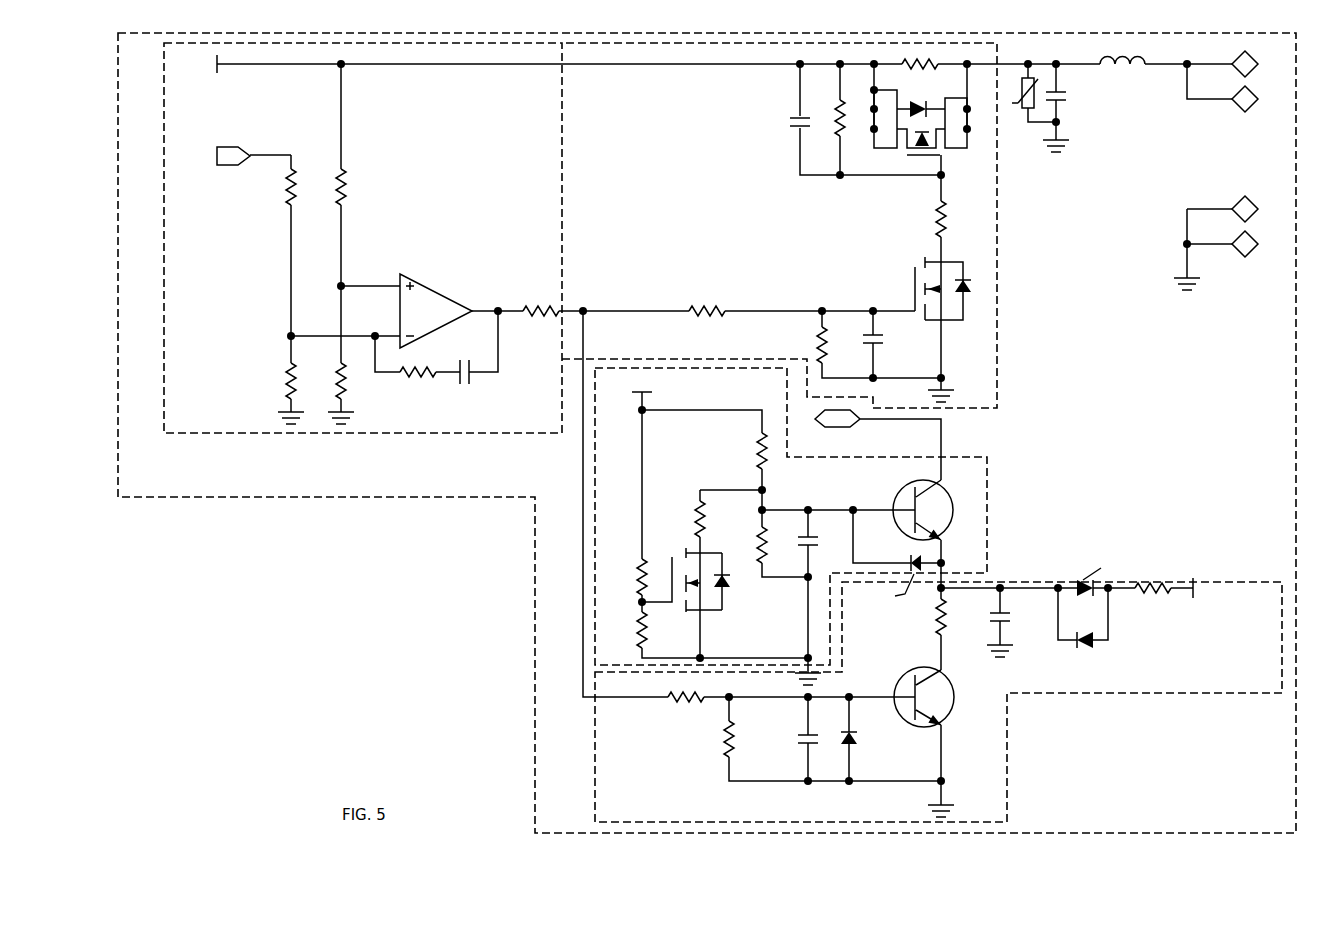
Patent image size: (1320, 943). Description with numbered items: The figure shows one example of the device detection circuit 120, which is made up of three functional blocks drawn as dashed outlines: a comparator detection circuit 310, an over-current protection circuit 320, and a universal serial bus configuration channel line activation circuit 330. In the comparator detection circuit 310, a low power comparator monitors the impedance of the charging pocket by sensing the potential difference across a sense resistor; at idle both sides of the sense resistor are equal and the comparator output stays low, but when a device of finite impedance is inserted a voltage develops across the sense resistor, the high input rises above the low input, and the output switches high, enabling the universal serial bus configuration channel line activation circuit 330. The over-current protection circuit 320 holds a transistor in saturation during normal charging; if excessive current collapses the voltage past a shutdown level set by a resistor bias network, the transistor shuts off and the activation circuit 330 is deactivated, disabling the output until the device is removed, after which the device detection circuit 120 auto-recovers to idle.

The device detection circuit 120 is at (535, 665).
The comparator detection circuit 310 is at (997, 224).
The over-current protection circuit 320 is at (987, 512).
The universal serial bus configuration channel line activation circuit 330 is at (1007, 755).